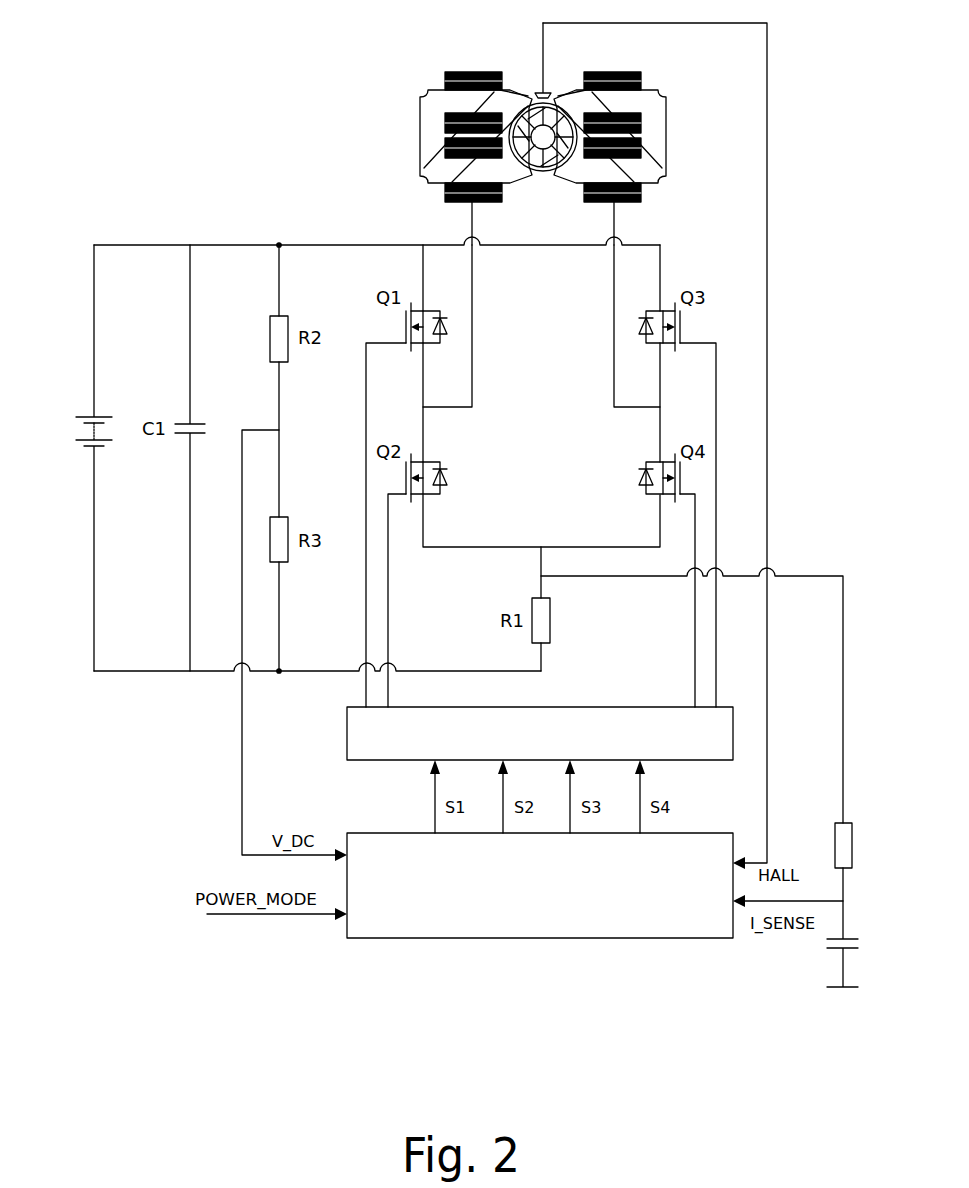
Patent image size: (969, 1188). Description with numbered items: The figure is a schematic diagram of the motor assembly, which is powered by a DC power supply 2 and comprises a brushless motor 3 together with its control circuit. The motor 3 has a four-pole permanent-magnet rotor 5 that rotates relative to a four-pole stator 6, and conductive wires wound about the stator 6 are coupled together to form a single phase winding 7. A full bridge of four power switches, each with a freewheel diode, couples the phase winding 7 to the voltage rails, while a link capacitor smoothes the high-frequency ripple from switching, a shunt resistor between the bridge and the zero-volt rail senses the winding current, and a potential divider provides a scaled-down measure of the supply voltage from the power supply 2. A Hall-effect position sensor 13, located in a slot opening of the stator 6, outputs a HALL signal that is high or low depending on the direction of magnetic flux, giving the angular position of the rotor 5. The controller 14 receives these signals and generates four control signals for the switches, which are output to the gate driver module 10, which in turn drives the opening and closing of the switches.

The DC power supply 2 is at (76, 432).
The brushless motor 3 is at (516, 134).
The four-pole permanent-magnet rotor 5 is at (543, 172).
The four-pole stator 6 is at (420, 135).
The single phase winding 7 is at (475, 72).
The gate driver module 10 is at (347, 734).
The position sensor 13 is at (541, 92).
The controller 14 is at (612, 938).